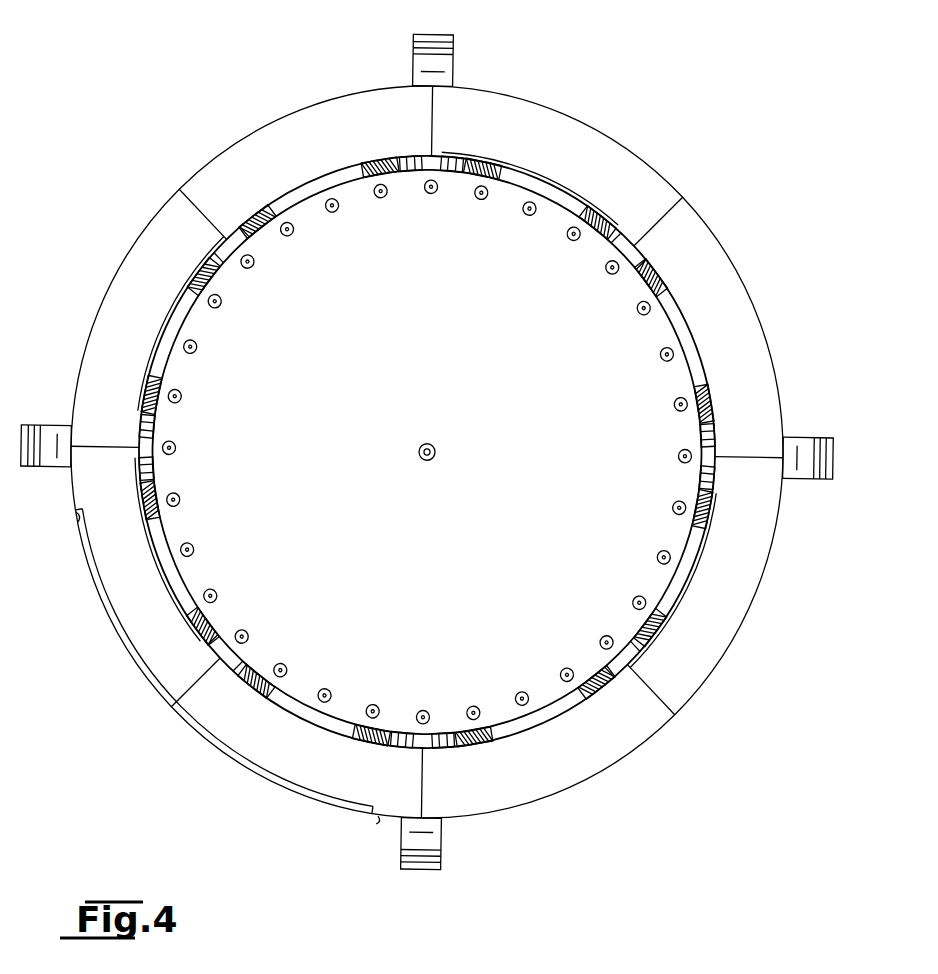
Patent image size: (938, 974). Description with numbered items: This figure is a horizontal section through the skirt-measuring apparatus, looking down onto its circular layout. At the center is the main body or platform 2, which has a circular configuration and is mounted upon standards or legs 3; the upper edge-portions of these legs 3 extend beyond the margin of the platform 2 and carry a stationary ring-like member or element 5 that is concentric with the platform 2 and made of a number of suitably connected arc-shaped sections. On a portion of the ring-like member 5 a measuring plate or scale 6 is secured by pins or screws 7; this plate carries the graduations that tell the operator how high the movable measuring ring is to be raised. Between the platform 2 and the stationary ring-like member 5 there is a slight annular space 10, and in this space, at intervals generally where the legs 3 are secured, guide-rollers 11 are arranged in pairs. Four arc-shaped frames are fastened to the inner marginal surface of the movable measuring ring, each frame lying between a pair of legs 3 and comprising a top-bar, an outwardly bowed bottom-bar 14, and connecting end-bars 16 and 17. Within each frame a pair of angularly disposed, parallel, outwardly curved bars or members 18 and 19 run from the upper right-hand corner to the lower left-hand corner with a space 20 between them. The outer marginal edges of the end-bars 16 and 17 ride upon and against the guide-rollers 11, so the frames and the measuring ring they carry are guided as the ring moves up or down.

The main body or platform 2 is at (370, 425).
The standards or legs 3 is at (438, 60).
The ring-like member or element 5 is at (556, 113).
The measuring plate or scale 6 is at (183, 712).
The pins or screws 7 is at (380, 822).
The annular space 10 is at (331, 192).
The guide-rollers 11 is at (414, 175).
The bottom-bar 14 is at (300, 212).
The end-bar 16 is at (474, 177).
The end-bar 17 is at (384, 175).
The angularly disposed bar or member 18 is at (548, 182).
The angularly disposed bar or member 19 is at (256, 225).
The space 20 is at (626, 252).